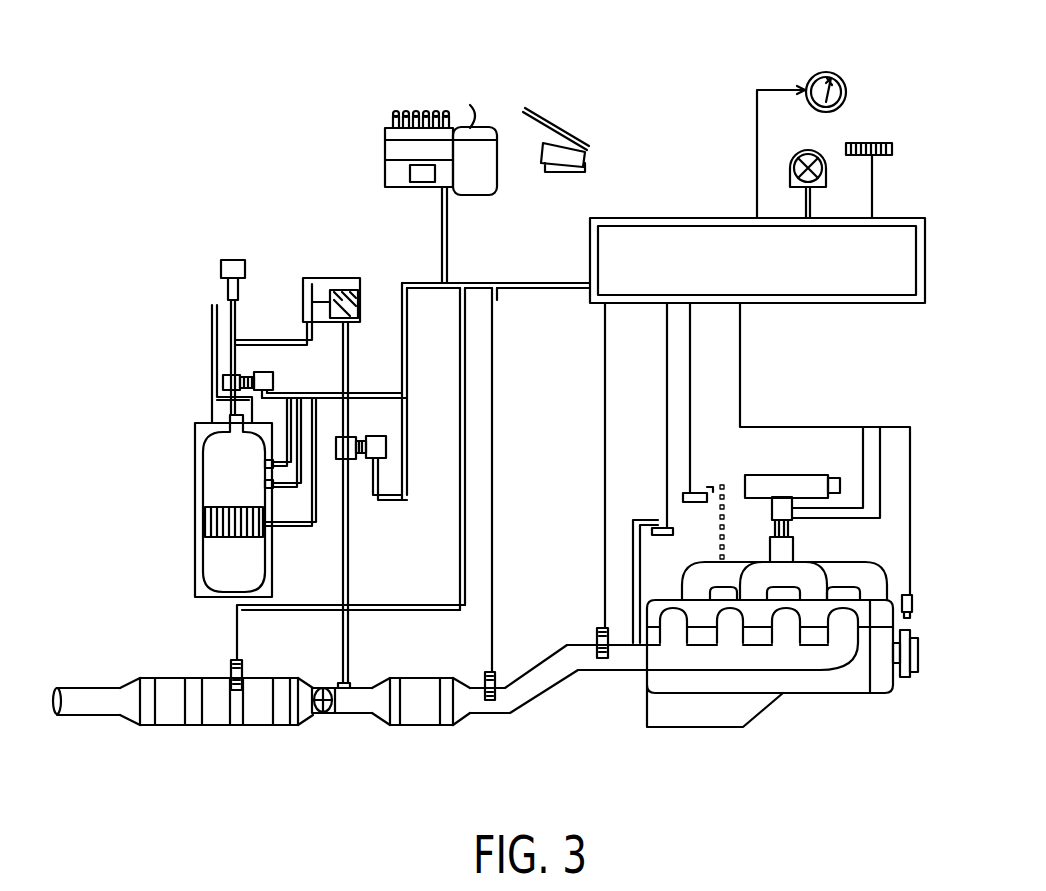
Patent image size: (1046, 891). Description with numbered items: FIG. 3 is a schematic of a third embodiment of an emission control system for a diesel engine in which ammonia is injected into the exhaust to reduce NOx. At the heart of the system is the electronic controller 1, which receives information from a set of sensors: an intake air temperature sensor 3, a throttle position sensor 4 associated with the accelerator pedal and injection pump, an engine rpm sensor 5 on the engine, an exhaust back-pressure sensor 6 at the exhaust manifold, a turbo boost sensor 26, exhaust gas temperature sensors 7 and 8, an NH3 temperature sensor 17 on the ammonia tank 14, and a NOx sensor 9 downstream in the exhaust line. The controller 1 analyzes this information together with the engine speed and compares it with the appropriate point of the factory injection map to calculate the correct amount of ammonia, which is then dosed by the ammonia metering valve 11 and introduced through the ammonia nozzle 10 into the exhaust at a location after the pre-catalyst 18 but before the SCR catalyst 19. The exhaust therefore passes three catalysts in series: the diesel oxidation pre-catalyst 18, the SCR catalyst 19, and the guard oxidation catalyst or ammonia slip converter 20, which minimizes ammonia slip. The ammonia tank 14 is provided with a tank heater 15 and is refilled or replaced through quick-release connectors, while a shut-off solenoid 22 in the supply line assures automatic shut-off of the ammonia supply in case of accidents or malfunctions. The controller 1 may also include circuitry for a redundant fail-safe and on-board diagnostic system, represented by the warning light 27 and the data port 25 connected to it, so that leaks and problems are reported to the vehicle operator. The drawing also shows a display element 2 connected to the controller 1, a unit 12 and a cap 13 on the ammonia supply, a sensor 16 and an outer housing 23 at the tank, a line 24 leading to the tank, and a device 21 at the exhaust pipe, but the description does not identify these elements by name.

The electronic controller 1 is at (698, 218).
The gauge / display instrument 2 is at (823, 71).
The intake air temperature sensor 3 is at (799, 494).
The throttle position sensor 4 is at (524, 112).
The engine rpm sensor 5 is at (912, 616).
The exhaust back-pressure sensor 6 is at (662, 540).
The exhaust gas temperature sensor 7 is at (595, 634).
The exhaust gas temperature sensor 8 is at (230, 665).
The NOx sensor 9 is at (483, 680).
The ammonia nozzle 10 is at (350, 683).
The ammonia metering valve 11 is at (341, 462).
The pump 12 is at (330, 278).
The filler cap 13 is at (232, 258).
The ammonia tank 14 is at (222, 433).
The tank heater 15 is at (205, 521).
The level sensor 16 is at (263, 464).
The NH3 temperature sensor 17 is at (263, 484).
The pre-catalyst 18 is at (422, 727).
The SCR catalyst 19 is at (217, 727).
The ammonia slip converter 20 is at (170, 727).
The reducing agent injector / mixer 21 is at (322, 716).
The shut-off solenoid 22 is at (224, 378).
The tank housing 23 is at (195, 568).
The vent line 24 is at (210, 312).
The data port 25 is at (870, 141).
The turbo boost sensor 26 is at (692, 490).
The warning light 27 is at (797, 151).